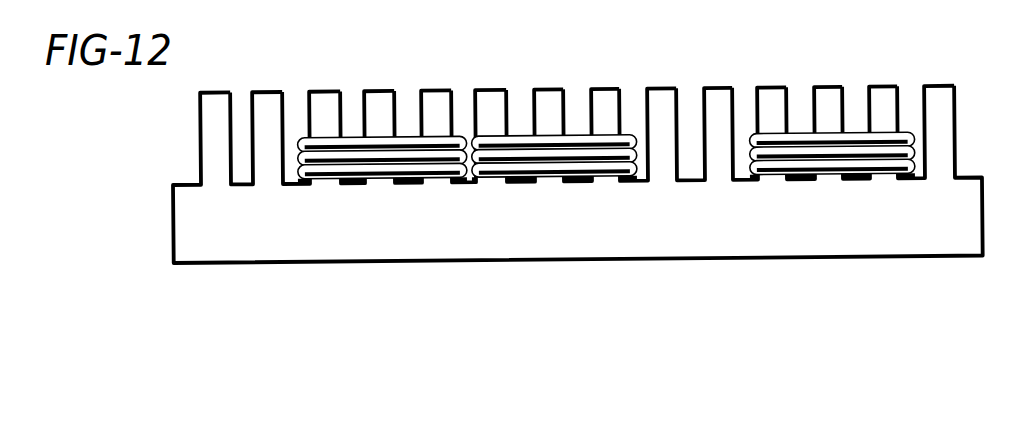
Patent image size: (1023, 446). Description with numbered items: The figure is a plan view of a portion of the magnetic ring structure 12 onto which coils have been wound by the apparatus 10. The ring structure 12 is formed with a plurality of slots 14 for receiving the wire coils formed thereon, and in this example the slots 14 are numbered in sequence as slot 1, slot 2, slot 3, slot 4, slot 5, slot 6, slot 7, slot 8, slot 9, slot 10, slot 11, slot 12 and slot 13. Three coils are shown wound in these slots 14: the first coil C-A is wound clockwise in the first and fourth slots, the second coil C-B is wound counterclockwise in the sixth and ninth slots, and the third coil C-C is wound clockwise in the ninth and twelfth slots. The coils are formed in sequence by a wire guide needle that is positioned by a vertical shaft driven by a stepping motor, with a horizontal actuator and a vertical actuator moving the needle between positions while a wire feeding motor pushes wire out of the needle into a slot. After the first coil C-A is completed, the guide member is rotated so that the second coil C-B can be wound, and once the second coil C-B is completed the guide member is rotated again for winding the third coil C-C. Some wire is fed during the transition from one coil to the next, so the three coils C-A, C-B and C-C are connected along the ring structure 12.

The slots 14 is at (624, 179).
The first coil C-A is at (830, 180).
The second coil C-B is at (550, 181).
The third coil C-C is at (387, 180).
The upper most position 1 is at (926, 166).
The downwardmost position 2 is at (870, 166).
The position 3 is at (814, 167).
The slot 4 is at (759, 166).
The position 5 is at (704, 168).
The position 6 is at (648, 168).
The position 7 is at (591, 169).
The position 8 is at (535, 169).
The slot 9 is at (479, 170).
The apparatus 10 is at (422, 170).
The slot 11 is at (366, 171).
The magnetic ring structure 12 is at (311, 171).
The slot 13 is at (253, 172).